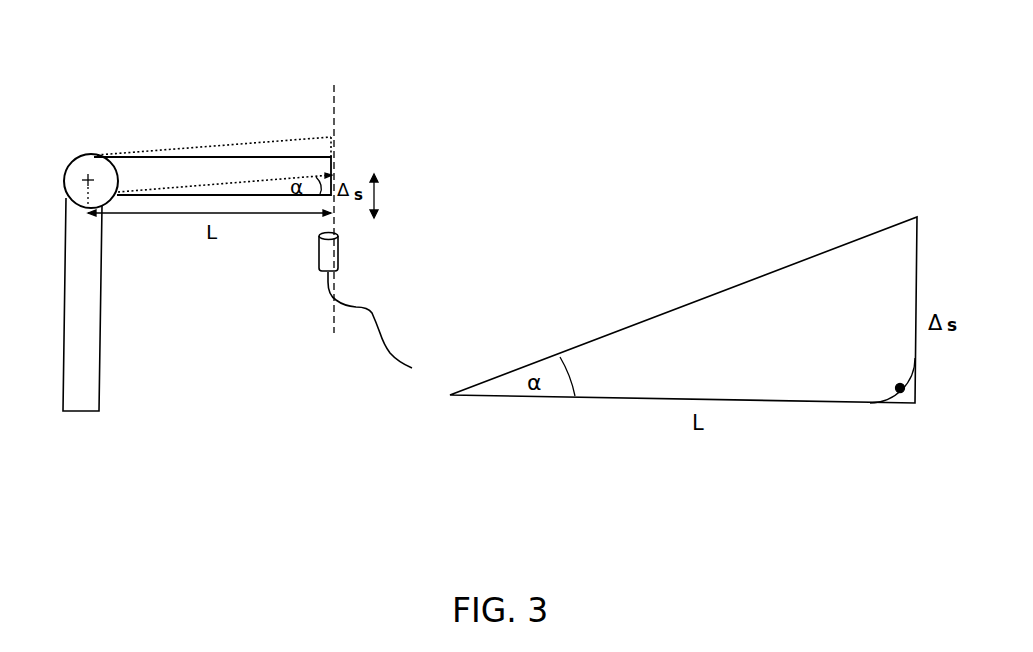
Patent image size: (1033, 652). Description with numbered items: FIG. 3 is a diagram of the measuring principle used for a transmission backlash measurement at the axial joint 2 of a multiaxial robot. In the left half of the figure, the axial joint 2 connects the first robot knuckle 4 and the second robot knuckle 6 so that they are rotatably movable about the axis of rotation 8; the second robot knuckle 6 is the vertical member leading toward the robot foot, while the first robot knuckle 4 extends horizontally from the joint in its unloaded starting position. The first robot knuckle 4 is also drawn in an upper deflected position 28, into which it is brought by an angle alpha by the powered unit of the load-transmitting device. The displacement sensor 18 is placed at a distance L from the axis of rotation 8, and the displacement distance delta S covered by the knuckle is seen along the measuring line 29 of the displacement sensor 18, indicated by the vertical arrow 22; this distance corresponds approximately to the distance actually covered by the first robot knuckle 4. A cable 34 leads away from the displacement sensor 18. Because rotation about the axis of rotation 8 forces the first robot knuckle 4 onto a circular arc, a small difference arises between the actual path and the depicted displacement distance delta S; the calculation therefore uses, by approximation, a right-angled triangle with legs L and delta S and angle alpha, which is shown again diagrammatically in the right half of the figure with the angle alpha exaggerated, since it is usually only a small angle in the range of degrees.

The axial joint 2 is at (93, 158).
The first robot knuckle 4 is at (272, 158).
The second robot knuckle 6 is at (82, 318).
The axis of rotation 8 is at (87, 177).
The displacement sensor 18 is at (328, 252).
The displacement 22 is at (380, 195).
The deflected position 28 is at (292, 137).
The measuring line 29 is at (337, 108).
The cable 34 is at (383, 328).